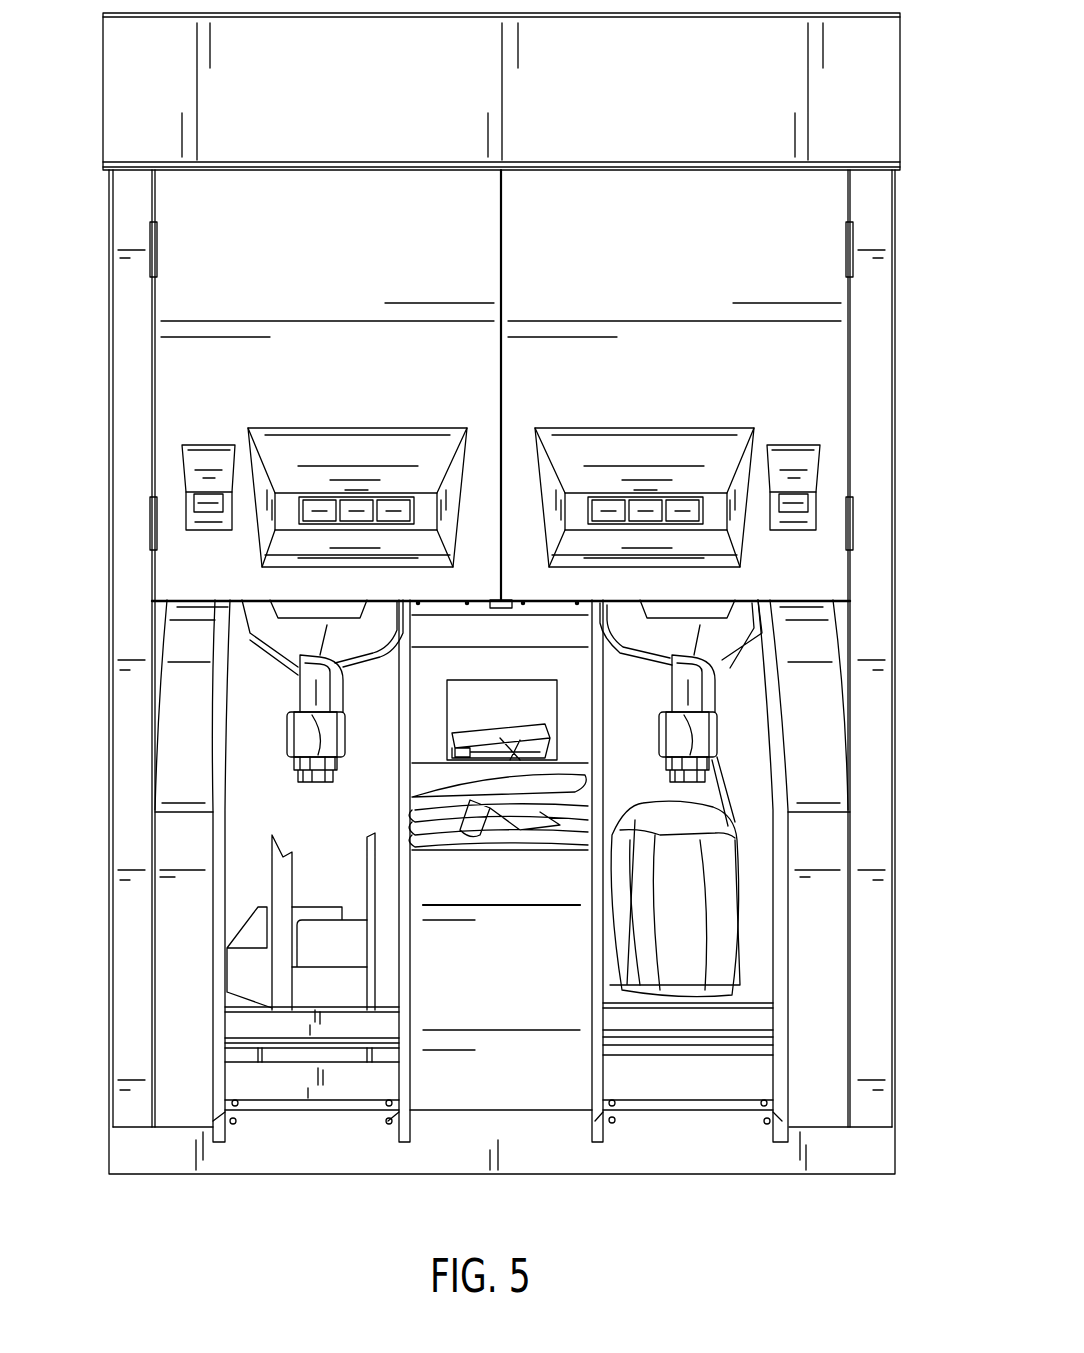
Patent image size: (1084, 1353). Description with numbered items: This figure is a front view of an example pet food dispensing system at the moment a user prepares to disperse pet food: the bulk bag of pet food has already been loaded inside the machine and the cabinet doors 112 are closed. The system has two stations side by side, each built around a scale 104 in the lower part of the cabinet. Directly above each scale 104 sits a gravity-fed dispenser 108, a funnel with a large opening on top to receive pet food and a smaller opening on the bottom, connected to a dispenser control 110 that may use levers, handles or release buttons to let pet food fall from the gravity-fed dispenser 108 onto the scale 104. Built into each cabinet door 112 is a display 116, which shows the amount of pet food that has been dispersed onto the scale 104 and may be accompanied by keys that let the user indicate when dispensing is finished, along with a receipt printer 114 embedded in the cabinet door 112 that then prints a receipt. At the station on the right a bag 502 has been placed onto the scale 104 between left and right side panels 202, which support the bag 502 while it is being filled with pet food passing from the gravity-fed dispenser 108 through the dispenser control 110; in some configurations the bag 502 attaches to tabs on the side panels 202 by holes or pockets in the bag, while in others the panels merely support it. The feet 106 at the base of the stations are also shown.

The scale 104 is at (248, 1021).
The foot 106 is at (388, 1119).
The gravity-fed dispenser 108 is at (285, 630).
The dispenser control 110 is at (283, 765).
The cabinet door 112 is at (213, 263).
The receipt printer 114 is at (213, 460).
The display 116 is at (283, 543).
The side panels 202 is at (370, 878).
The bag 502 is at (683, 920).